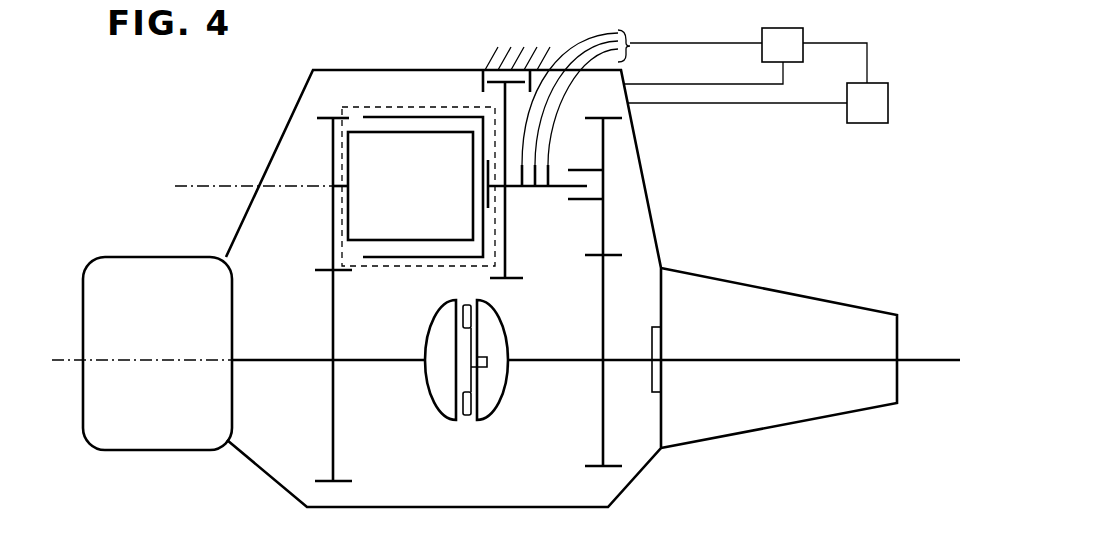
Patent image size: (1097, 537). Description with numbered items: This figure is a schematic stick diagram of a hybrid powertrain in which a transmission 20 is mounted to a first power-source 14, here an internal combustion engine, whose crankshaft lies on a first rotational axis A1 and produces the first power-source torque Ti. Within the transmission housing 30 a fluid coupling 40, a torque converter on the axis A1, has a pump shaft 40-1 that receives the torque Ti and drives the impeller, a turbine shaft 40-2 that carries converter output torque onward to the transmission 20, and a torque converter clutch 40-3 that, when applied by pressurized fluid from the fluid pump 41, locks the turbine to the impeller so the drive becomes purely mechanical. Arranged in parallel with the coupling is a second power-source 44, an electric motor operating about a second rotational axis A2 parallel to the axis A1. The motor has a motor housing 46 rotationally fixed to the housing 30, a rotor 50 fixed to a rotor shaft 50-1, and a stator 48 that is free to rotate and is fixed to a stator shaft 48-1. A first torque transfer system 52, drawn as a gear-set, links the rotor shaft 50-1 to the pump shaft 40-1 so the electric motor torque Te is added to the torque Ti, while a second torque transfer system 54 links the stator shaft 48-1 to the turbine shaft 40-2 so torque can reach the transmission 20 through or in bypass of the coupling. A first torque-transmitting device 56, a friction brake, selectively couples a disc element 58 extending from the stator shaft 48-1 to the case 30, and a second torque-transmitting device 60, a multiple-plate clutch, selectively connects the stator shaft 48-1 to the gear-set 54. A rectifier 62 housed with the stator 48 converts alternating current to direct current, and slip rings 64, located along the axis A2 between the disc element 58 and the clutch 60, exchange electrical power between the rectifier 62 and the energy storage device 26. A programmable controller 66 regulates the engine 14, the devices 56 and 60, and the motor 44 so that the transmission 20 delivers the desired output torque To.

The first power-source 14 is at (157, 353).
The transmission 20 is at (810, 358).
The energy storage device 26 is at (714, 56).
The transmission housing 30 is at (510, 70).
The fluid coupling 40 is at (471, 392).
The pump shaft 40-1 is at (388, 362).
The turbine shaft 40-2 is at (535, 358).
The torque converter clutch 40-3 is at (470, 417).
The fluid pump 41 is at (655, 393).
The second power-source 44 is at (360, 103).
The motor housing 46 is at (407, 267).
The stator 48 is at (407, 117).
The stator shaft 48-1 is at (512, 188).
The rotor 50 is at (410, 186).
The rotor shaft 50-1 is at (340, 186).
The first torque transfer system 52 is at (292, 222).
The second torque transfer system 54 is at (613, 233).
The first torque-transmitting device 56 is at (483, 88).
The disc element 58 is at (507, 262).
The second torque-transmitting device 60 is at (580, 170).
The rectifier 62 is at (490, 212).
The slip rings 64 is at (547, 188).
The controller 66 is at (758, 83).
The first rotational axis A1 is at (77, 363).
The second rotational axis A2 is at (218, 185).
The first power-source torque Ti is at (270, 337).
The electric motor torque Te is at (628, 212).
The transmission output torque To is at (950, 383).